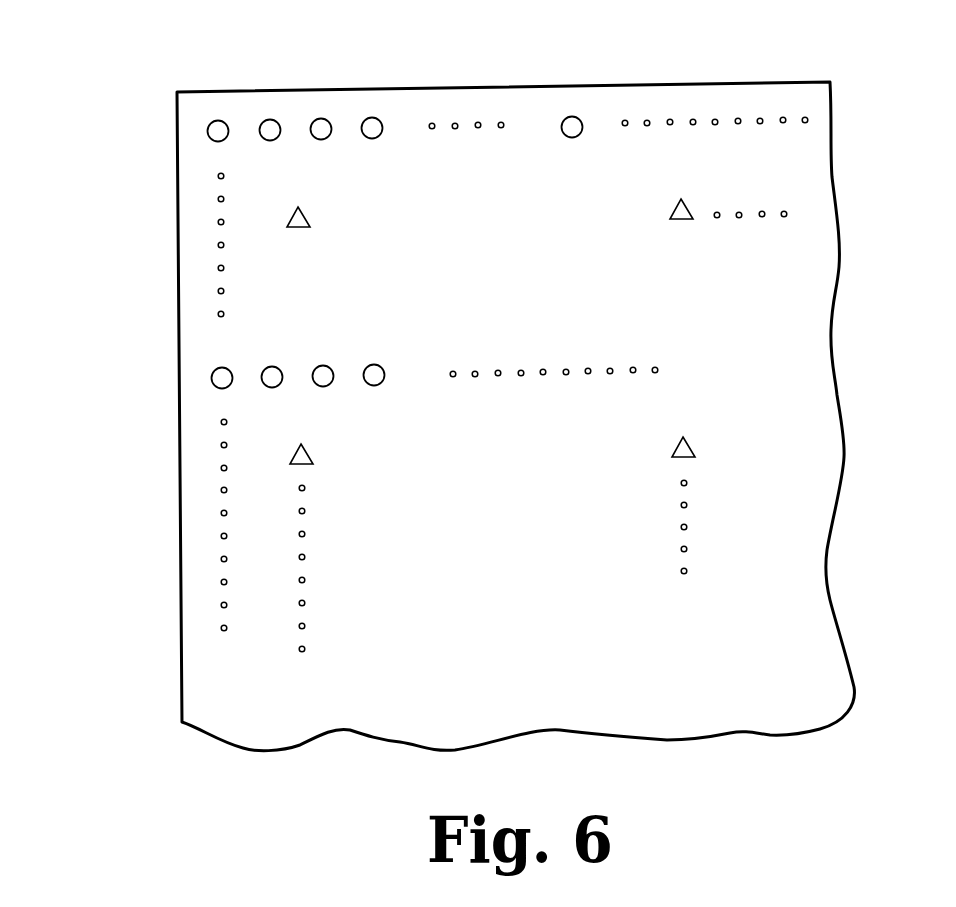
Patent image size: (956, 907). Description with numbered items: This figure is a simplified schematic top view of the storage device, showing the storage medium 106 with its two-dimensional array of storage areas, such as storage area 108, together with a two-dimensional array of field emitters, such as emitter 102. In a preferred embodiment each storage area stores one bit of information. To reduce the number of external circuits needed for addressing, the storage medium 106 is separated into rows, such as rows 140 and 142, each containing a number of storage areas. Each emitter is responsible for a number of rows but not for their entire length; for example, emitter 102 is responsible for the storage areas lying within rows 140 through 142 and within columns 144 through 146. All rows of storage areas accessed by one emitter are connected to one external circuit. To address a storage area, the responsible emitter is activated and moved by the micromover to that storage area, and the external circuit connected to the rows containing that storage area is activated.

The field emitter 102 is at (311, 212).
The storage medium 106 is at (730, 82).
The storage area 108 is at (219, 127).
The row 140 is at (200, 135).
The row 142 is at (203, 374).
The column 144 is at (213, 123).
The column 146 is at (572, 117).